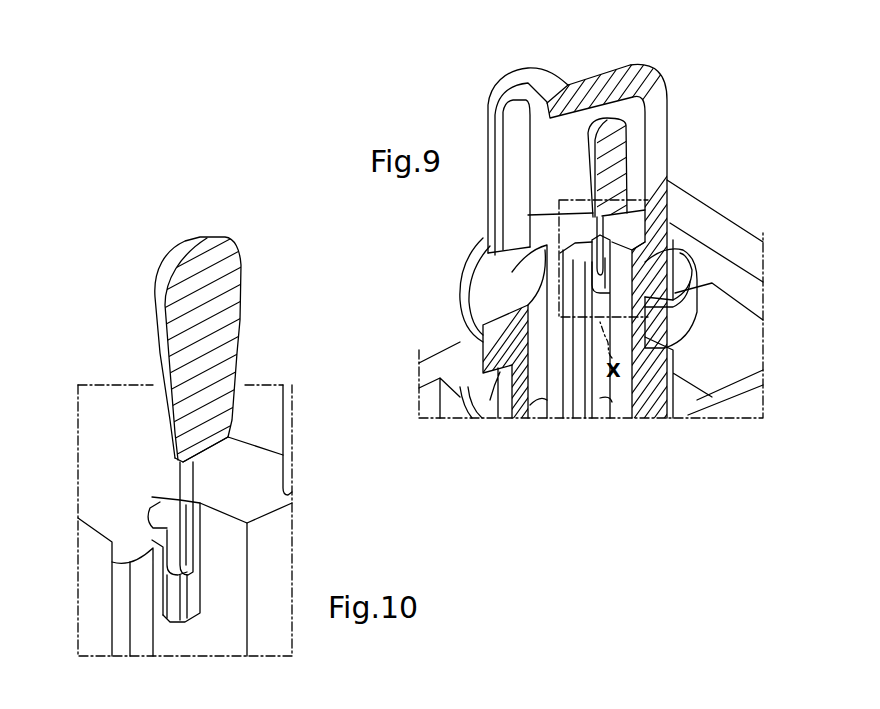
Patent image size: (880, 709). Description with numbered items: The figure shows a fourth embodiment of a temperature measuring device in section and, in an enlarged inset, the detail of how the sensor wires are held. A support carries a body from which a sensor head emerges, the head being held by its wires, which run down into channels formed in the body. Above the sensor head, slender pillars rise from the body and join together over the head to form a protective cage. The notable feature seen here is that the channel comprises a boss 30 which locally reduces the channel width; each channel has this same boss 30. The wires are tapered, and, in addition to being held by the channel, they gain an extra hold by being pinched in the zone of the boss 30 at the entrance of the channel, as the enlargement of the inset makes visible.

In FIG. 10, the boss 30 is at (195, 588).
In FIG. 9, the boss 30 is at (605, 280).